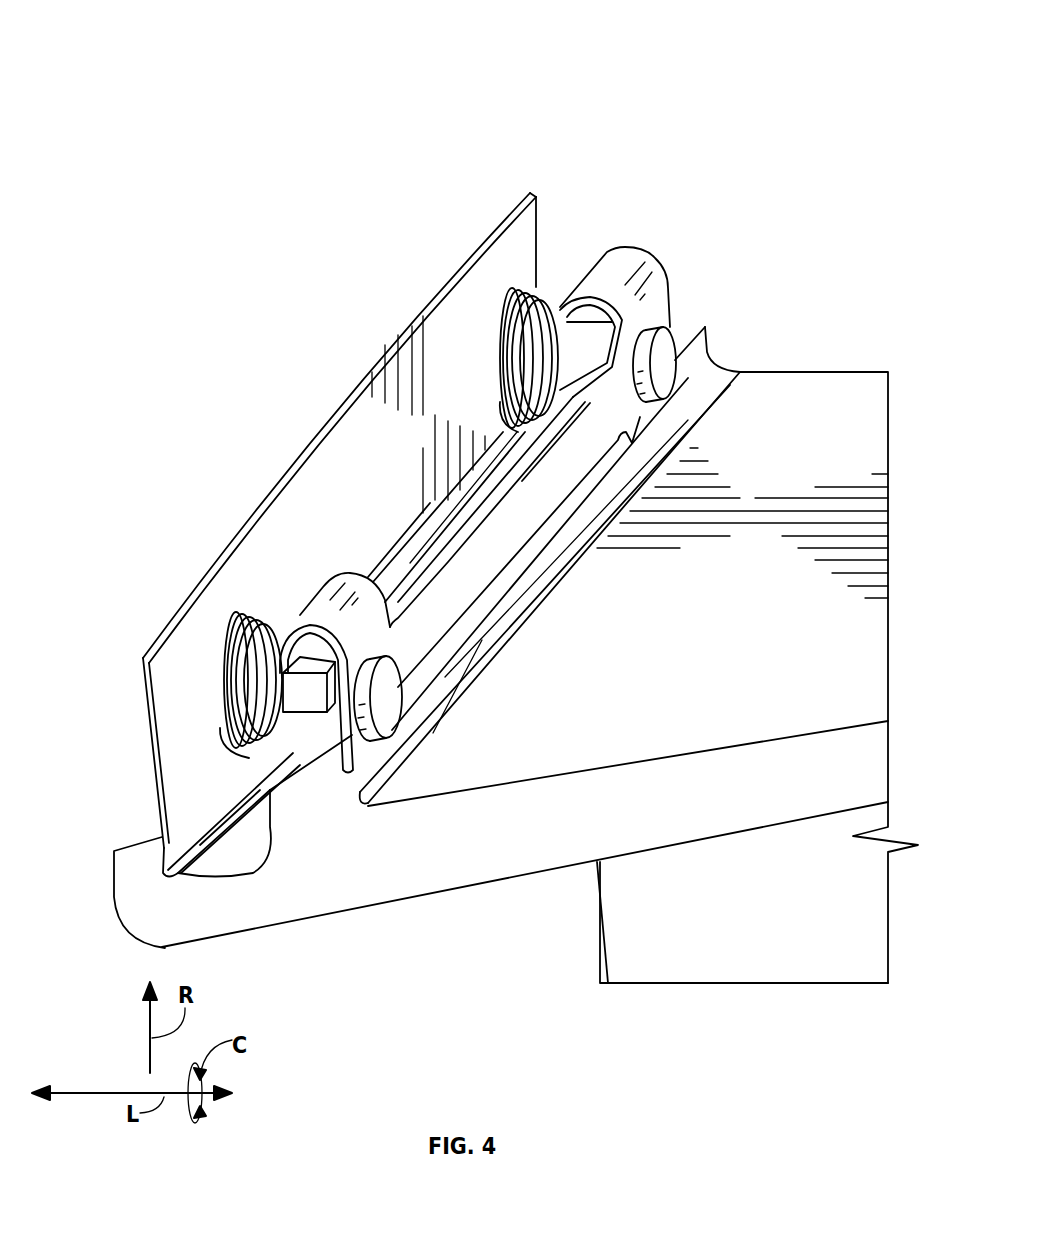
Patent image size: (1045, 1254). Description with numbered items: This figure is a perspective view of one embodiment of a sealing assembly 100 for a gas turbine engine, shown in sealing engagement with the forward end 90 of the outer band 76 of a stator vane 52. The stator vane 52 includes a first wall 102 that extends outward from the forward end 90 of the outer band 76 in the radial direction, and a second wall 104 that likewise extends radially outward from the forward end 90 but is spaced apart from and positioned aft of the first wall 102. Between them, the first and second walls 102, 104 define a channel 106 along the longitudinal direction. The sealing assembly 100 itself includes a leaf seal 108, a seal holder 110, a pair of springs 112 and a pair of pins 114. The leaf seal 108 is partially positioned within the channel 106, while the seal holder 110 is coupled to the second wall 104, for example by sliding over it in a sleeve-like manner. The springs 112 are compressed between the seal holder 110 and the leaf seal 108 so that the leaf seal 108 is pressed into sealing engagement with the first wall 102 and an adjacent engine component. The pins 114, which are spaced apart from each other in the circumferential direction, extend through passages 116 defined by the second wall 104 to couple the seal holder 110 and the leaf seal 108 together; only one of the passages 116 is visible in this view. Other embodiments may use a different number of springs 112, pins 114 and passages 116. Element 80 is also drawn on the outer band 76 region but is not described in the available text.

The sealing assembly 100 is at (204, 185).
The leaf seal 108 is at (302, 447).
The springs 112 is at (548, 290).
The seal holder 110 is at (640, 250).
The pins 114 is at (675, 358).
The outer band 76 is at (833, 398).
The stator vane 52 is at (914, 567).
The second wall 104 is at (312, 655).
The first wall 102 is at (136, 830).
The forward end 90 is at (92, 881).
The channel 106 is at (226, 840).
The passages 116 is at (308, 759).
The lower flange 80 is at (743, 960).